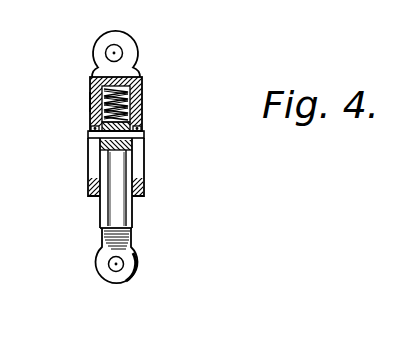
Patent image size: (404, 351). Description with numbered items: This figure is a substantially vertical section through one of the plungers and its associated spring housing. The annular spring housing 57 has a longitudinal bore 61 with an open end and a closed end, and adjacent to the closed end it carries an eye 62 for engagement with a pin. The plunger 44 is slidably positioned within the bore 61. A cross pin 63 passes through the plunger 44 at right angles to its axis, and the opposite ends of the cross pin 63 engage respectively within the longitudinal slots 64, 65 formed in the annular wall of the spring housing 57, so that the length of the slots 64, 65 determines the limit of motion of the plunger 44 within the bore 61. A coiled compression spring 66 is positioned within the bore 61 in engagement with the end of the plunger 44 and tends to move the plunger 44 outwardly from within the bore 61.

The eye 62 is at (131, 50).
The annular spring housing 57 is at (141, 91).
The longitudinal bore 61 is at (132, 112).
The coiled compression spring 66 is at (90, 103).
The cross pin 63 is at (144, 136).
The longitudinal slot 65 is at (92, 165).
The longitudinal slot 64 is at (137, 162).
The plunger 44 is at (122, 210).